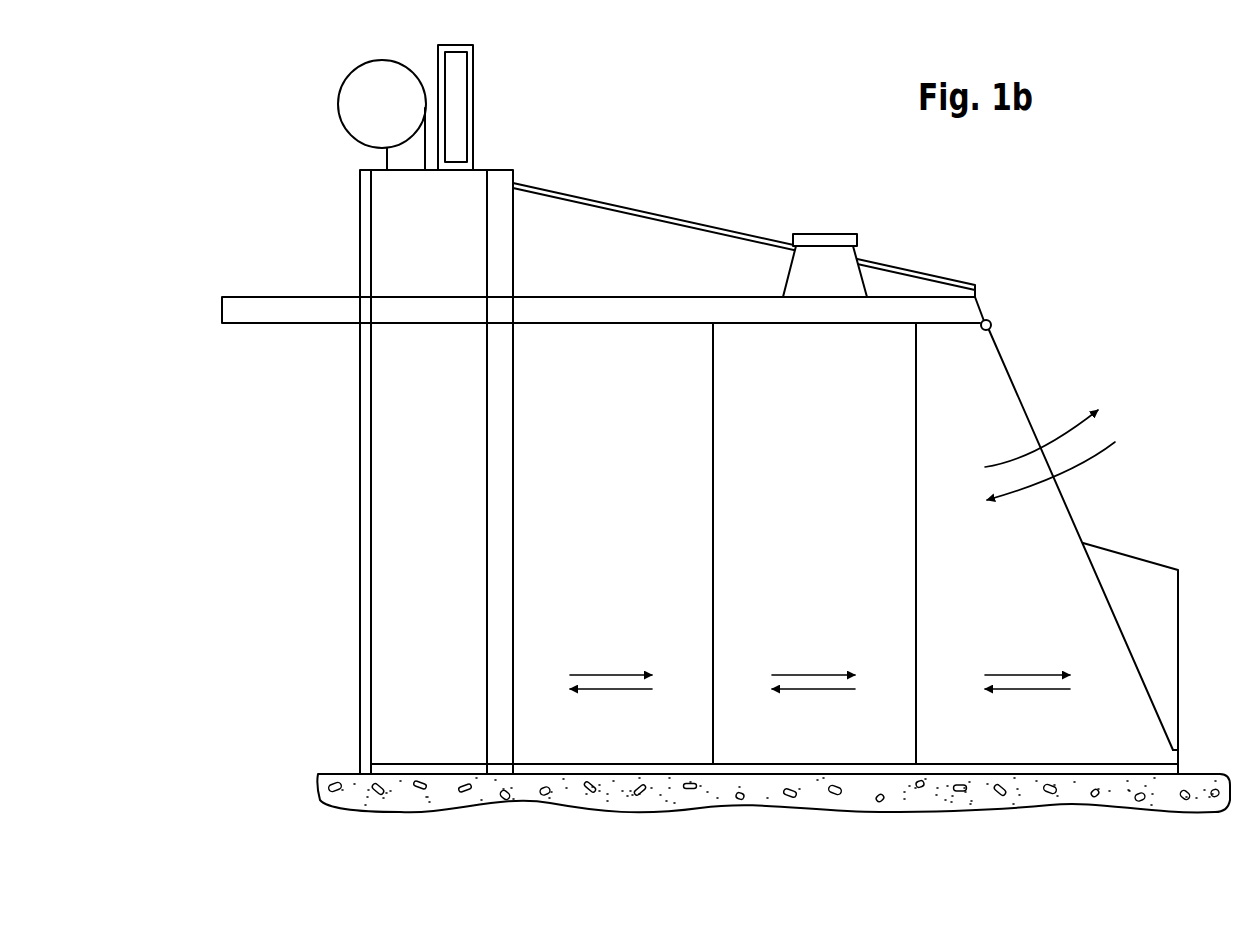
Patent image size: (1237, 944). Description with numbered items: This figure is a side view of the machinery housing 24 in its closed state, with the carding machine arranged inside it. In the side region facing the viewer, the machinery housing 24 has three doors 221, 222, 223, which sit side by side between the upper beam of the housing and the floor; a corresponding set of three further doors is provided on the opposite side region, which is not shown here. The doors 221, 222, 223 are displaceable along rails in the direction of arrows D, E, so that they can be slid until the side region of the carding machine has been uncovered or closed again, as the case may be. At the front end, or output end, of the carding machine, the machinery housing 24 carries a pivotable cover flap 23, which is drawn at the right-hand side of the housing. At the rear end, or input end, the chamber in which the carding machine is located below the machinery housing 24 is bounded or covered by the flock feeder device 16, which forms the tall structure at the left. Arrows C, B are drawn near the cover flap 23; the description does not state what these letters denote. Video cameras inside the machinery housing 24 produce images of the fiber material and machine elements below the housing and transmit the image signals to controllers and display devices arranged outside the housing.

The flock feeder device 16 is at (387, 441).
The machinery housing 24 is at (1042, 336).
The pivotable cover flap 23 is at (1073, 520).
The door 221 is at (655, 748).
The door 222 is at (812, 748).
The door 223 is at (1048, 750).
The air flow direction C is at (1073, 425).
The air flow direction B is at (1075, 477).
The arrow D is at (603, 672).
The arrow E is at (606, 690).